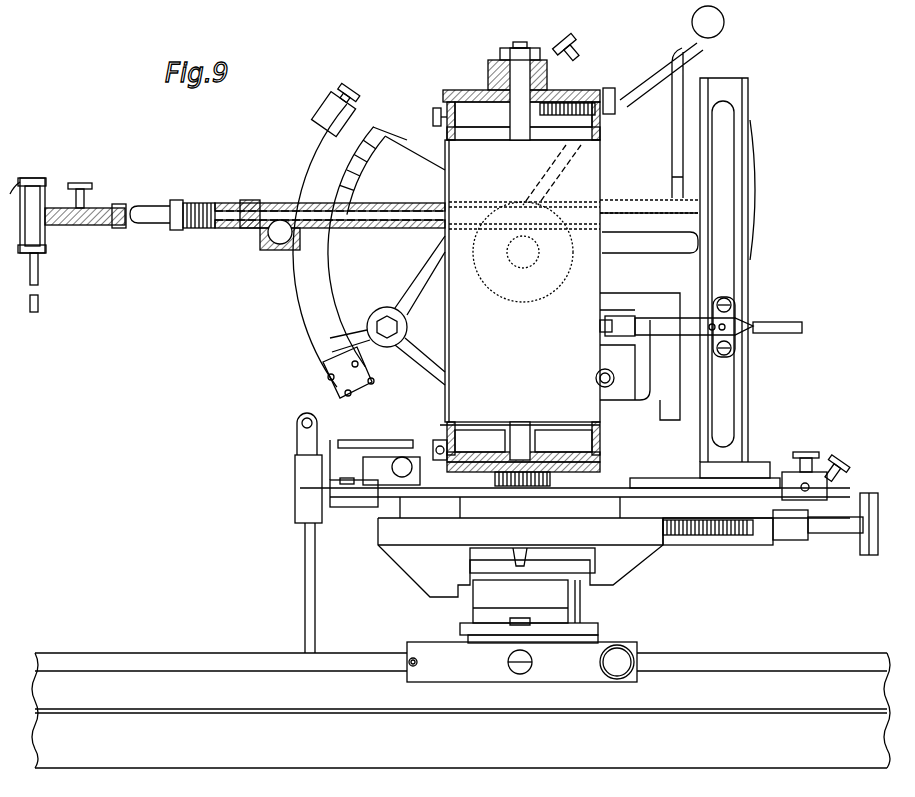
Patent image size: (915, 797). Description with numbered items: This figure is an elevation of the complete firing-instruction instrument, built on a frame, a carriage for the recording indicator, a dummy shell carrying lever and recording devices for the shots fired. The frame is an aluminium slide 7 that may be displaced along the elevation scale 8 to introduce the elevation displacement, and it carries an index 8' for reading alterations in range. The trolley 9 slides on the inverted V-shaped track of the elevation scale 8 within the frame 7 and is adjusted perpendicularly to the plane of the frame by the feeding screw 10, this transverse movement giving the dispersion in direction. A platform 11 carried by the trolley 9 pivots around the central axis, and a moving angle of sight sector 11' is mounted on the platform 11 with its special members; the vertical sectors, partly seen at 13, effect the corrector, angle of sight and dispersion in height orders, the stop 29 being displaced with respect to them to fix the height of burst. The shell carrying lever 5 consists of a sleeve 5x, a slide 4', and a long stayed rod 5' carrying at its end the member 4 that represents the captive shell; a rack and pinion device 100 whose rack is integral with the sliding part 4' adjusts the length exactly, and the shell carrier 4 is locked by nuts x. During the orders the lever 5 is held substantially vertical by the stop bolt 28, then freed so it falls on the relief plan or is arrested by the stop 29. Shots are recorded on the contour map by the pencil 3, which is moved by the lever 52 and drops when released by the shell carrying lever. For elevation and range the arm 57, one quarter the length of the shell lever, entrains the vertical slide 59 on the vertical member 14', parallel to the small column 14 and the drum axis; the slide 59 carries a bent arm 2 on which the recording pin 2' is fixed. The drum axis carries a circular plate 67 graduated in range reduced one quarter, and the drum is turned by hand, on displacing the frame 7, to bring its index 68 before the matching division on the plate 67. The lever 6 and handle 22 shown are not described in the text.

The bent arm 2 is at (690, 314).
The recording pin 2' is at (628, 341).
The pencil 3 is at (310, 557).
The shell carrier member 4 is at (72, 245).
The slide 4' is at (307, 202).
The shell carrying lever 5 is at (330, 187).
The long stayed rod 5' is at (150, 230).
The sleeve 5x is at (262, 202).
The lever 6 is at (682, 80).
The slide 7 is at (654, 546).
The elevation scale 8 is at (524, 631).
The index 8' is at (532, 536).
The trolley 9 is at (375, 490).
The feeding screw 10 is at (754, 535).
The platform 11 is at (718, 451).
The moving angle of sight sector 11' is at (775, 462).
The vertical sectors 13 is at (360, 150).
The small column 14 is at (745, 270).
The vertical member 14' is at (769, 274).
The handle 22 is at (764, 528).
The stop bolt 28 is at (596, 380).
The stop 29 is at (304, 302).
The lever 52 is at (392, 425).
The arm 57 is at (784, 333).
The vertical slide 59 is at (734, 310).
The circular plate 67 is at (496, 92).
The index 68 is at (446, 92).
The rack and pinion device 100 is at (272, 250).
The clamp x is at (8, 198).